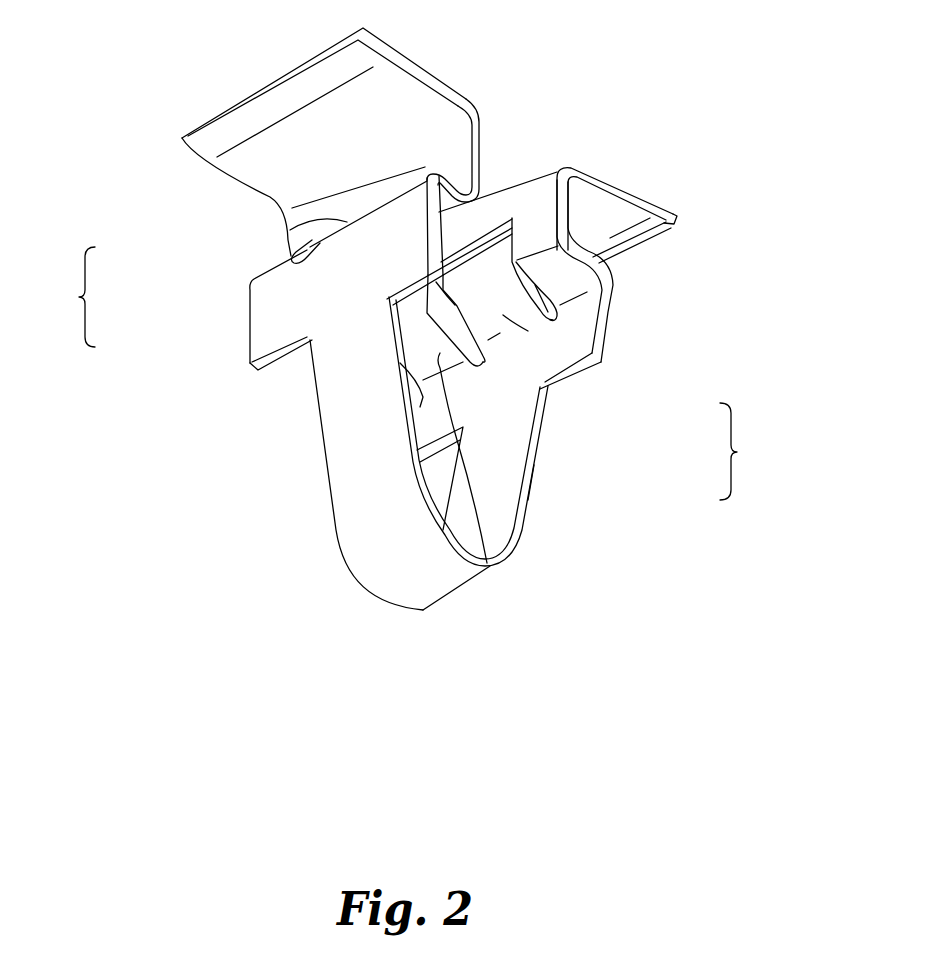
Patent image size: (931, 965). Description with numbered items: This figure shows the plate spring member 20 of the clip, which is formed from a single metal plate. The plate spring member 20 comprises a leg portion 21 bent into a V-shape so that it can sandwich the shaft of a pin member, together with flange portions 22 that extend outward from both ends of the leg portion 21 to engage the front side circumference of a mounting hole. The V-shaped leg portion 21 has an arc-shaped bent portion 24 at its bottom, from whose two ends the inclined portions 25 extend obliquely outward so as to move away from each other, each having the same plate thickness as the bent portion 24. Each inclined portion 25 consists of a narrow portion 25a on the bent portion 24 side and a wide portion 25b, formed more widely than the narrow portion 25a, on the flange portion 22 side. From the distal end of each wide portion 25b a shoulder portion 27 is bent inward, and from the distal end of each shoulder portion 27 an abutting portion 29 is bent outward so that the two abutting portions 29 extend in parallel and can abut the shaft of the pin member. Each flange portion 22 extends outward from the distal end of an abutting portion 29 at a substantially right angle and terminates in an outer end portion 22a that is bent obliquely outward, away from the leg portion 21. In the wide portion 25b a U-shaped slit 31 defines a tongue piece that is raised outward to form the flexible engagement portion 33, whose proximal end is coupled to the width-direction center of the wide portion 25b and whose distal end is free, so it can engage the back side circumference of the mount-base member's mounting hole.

The plate spring member 20 is at (36, 314).
The leg portion 21 is at (250, 336).
The flange portion 22 is at (229, 177).
The outer end portion 22a is at (272, 98).
The bent portion 24 is at (423, 583).
The inclined portion 25 is at (347, 490).
The narrow portion 25a is at (506, 487).
The wide portion 25b is at (252, 347).
The shoulder portion 27 is at (476, 198).
The abutting portion 29 is at (477, 153).
The slit 31 is at (553, 313).
The engagement portion 33 is at (425, 176).